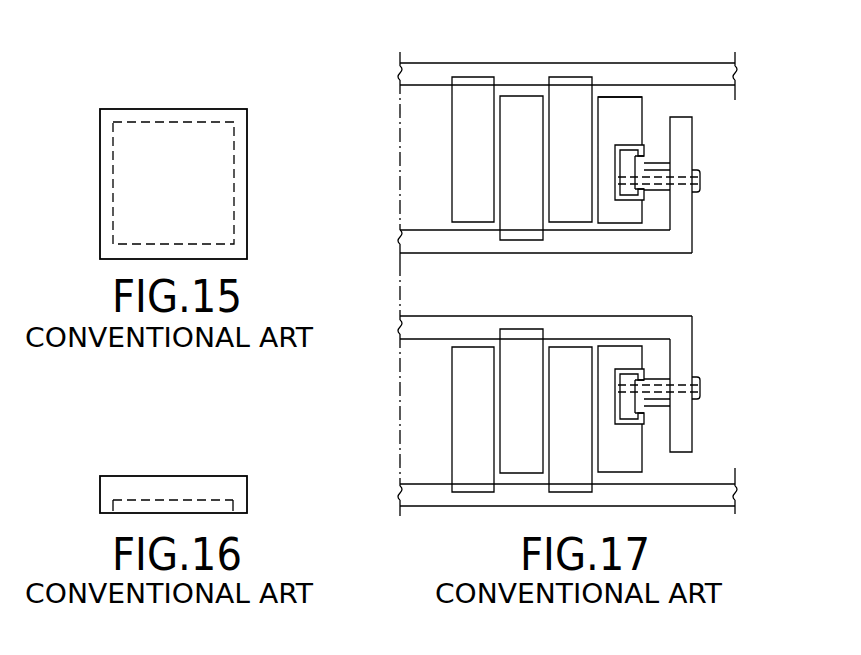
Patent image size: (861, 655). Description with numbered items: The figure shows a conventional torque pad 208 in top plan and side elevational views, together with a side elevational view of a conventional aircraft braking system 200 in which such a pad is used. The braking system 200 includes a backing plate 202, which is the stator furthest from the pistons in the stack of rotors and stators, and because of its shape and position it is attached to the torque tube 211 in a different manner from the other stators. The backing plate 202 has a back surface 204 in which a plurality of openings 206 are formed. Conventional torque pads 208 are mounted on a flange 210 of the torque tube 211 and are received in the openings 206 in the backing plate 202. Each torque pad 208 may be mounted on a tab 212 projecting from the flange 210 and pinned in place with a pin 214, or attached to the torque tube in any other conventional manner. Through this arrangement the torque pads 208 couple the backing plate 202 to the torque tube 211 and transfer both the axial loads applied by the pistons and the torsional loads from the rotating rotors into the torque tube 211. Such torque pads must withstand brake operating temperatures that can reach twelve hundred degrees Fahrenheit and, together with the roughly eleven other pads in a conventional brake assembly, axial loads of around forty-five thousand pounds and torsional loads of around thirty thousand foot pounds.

In FIG. 17, the conventional aircraft braking system 200 is at (757, 219).
In FIG. 17, the backing plate 202 is at (611, 105).
In FIG. 17, the back surface 204 is at (645, 106).
In FIG. 17, the openings 206 is at (628, 157).
In FIG. 15, the torque pad 208 is at (184, 146).
In FIG. 16, the torque pad 208 is at (192, 483).
In FIG. 17, the torque pad 208 is at (643, 155).
In FIG. 17, the flange 210 is at (683, 228).
In FIG. 17, the torque tube 211 is at (650, 240).
In FIG. 17, the tabs 212 is at (664, 162).
In FIG. 17, the pins 214 is at (655, 180).